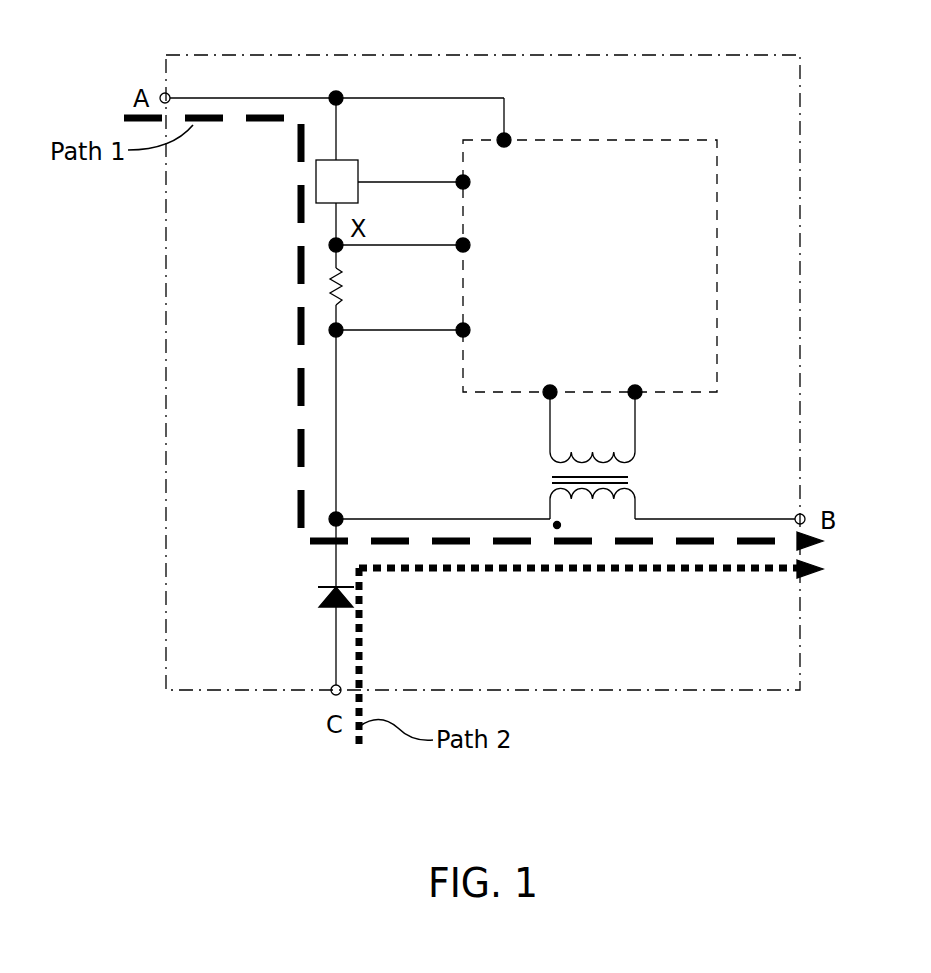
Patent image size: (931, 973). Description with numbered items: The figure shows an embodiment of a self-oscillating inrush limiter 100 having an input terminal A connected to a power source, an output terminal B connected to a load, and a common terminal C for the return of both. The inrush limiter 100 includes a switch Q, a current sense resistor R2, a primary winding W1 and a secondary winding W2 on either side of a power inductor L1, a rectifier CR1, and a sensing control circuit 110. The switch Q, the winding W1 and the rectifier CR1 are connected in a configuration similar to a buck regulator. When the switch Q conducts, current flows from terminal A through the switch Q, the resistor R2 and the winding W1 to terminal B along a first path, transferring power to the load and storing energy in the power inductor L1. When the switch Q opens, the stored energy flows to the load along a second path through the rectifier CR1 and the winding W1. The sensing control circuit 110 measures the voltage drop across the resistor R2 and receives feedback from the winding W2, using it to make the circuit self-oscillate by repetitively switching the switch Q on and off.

The inrush limiter 100 is at (613, 56).
The sensing control circuit 110 is at (648, 264).
The switch Q is at (337, 181).
The current sense resistor R2 is at (356, 287).
The rectifier CR1 is at (301, 600).
The power inductor L1 is at (610, 483).
The primary winding W1 is at (592, 511).
The secondary winding W2 is at (592, 427).